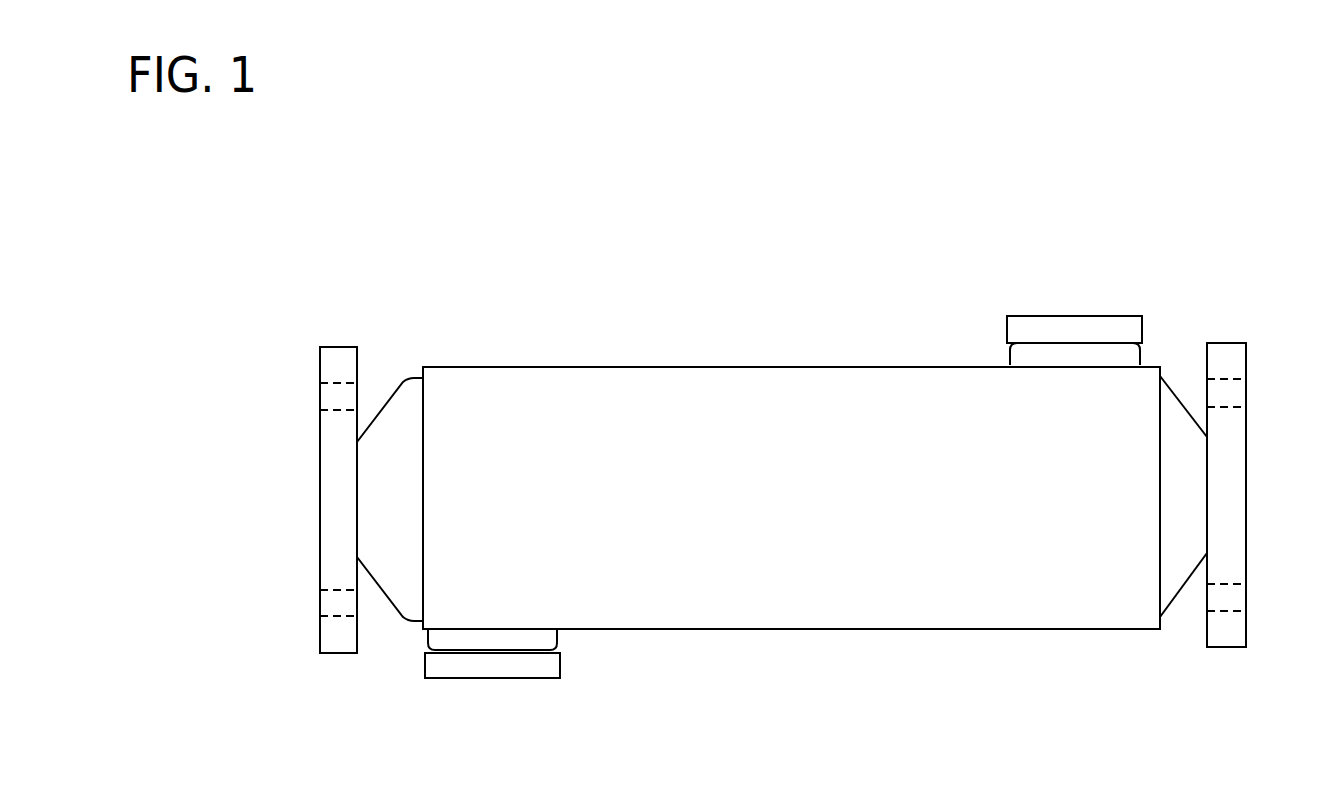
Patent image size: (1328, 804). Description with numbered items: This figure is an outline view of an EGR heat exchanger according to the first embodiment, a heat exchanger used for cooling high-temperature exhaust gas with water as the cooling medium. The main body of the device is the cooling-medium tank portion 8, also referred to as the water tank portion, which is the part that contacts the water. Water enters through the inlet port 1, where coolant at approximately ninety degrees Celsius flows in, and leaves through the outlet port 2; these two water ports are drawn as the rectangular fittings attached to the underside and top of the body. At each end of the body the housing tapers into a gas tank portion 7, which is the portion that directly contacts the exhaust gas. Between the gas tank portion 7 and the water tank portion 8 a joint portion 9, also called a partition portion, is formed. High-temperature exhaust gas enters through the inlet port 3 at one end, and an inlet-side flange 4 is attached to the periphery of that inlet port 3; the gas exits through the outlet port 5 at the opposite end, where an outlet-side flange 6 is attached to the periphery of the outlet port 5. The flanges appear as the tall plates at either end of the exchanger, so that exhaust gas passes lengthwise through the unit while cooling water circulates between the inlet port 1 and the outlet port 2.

The inlet port of water 1 is at (487, 679).
The outlet port of water 2 is at (1069, 320).
The inlet port of high-temperature exhaust gas 3 is at (322, 470).
The inlet-side flange 4 is at (342, 654).
The outlet port of high-temperature exhaust gas 5 is at (1242, 466).
The outlet-side flange 6 is at (1228, 648).
The gas tank portion 7 is at (388, 385).
The cooling-medium tank portion 8 is at (717, 380).
The joint portion 9 is at (448, 359).